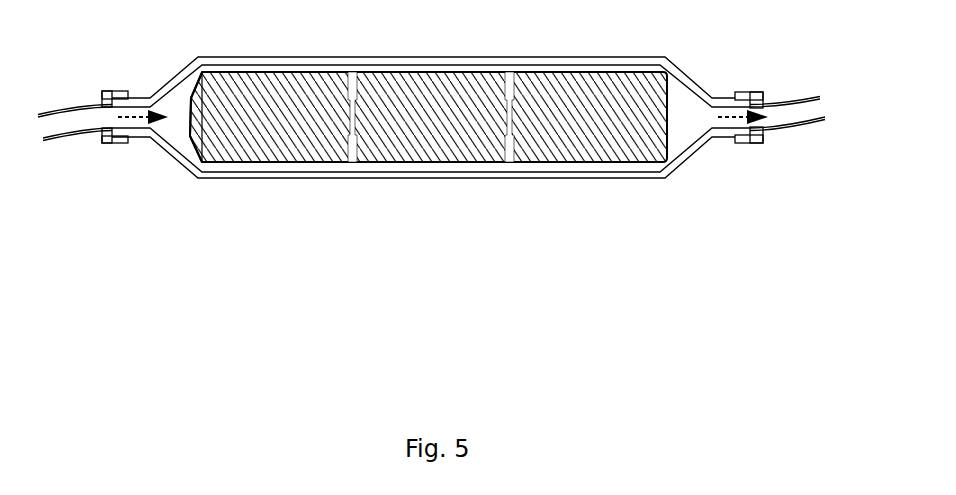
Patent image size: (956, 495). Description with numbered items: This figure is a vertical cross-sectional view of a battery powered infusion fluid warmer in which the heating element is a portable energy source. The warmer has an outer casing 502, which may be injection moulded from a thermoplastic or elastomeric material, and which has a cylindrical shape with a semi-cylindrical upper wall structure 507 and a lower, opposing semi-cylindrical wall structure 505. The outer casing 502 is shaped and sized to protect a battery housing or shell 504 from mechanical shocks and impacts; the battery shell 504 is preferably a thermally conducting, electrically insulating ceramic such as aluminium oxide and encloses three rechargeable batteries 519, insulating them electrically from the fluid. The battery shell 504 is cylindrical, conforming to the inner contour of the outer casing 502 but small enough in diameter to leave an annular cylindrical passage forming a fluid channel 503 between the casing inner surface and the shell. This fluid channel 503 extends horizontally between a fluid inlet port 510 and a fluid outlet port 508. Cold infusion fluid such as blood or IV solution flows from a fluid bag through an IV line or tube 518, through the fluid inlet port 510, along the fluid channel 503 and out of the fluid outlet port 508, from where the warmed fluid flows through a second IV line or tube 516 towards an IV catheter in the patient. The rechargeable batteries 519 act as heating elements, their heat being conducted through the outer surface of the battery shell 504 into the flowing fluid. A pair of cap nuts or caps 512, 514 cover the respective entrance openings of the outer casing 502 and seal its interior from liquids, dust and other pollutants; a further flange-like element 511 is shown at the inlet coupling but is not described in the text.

The outer casing 502 is at (295, 56).
The fluid channel 503 is at (355, 163).
The battery shell 504 is at (509, 71).
The lower semi-cylindrical wall structure 505 is at (643, 178).
The semi-cylindrical upper wall structure 507 is at (616, 54).
The fluid outlet port 508 is at (673, 117).
The fluid inlet port 510 is at (190, 113).
The inlet flange 511 is at (148, 99).
The cap nut 512 is at (104, 91).
The cap nut 514 is at (749, 91).
The IV line or tube 516 is at (808, 129).
The IV line or tube 518 is at (65, 133).
The rechargeable batteries 519 is at (533, 153).